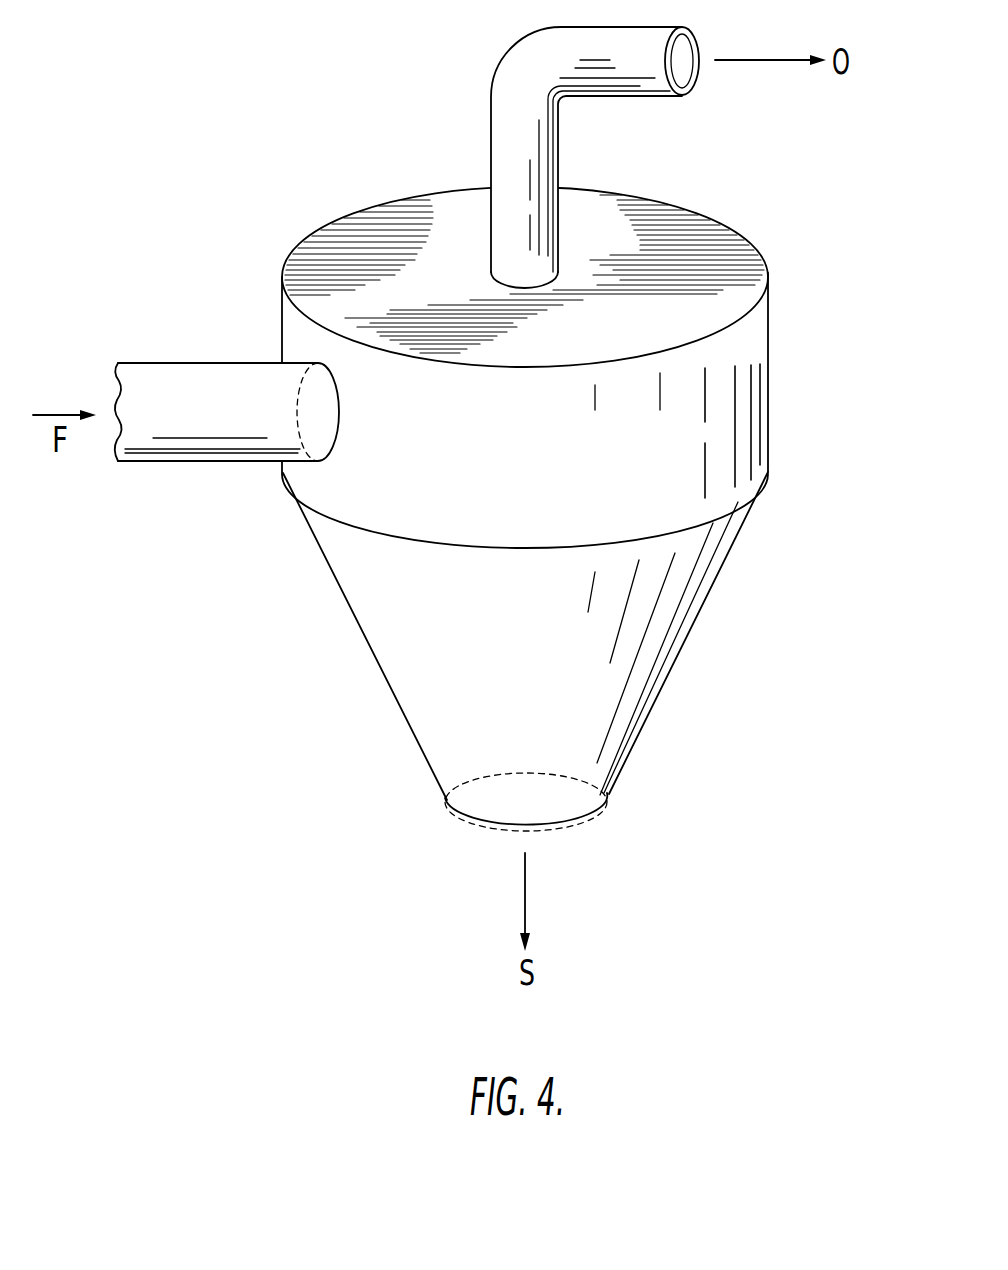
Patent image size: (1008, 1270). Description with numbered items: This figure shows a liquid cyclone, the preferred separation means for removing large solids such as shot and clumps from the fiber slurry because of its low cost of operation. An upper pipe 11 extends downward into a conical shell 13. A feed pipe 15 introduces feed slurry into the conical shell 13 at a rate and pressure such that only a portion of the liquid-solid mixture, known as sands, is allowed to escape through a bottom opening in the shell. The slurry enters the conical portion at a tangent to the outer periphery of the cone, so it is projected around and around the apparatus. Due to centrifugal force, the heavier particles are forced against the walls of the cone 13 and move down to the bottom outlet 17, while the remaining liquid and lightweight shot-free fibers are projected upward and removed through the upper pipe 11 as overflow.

The upper pipe 11 is at (576, 97).
The conical shell 13 is at (727, 565).
The feed pipe 15 is at (205, 462).
The bottom outlet 17 is at (575, 828).